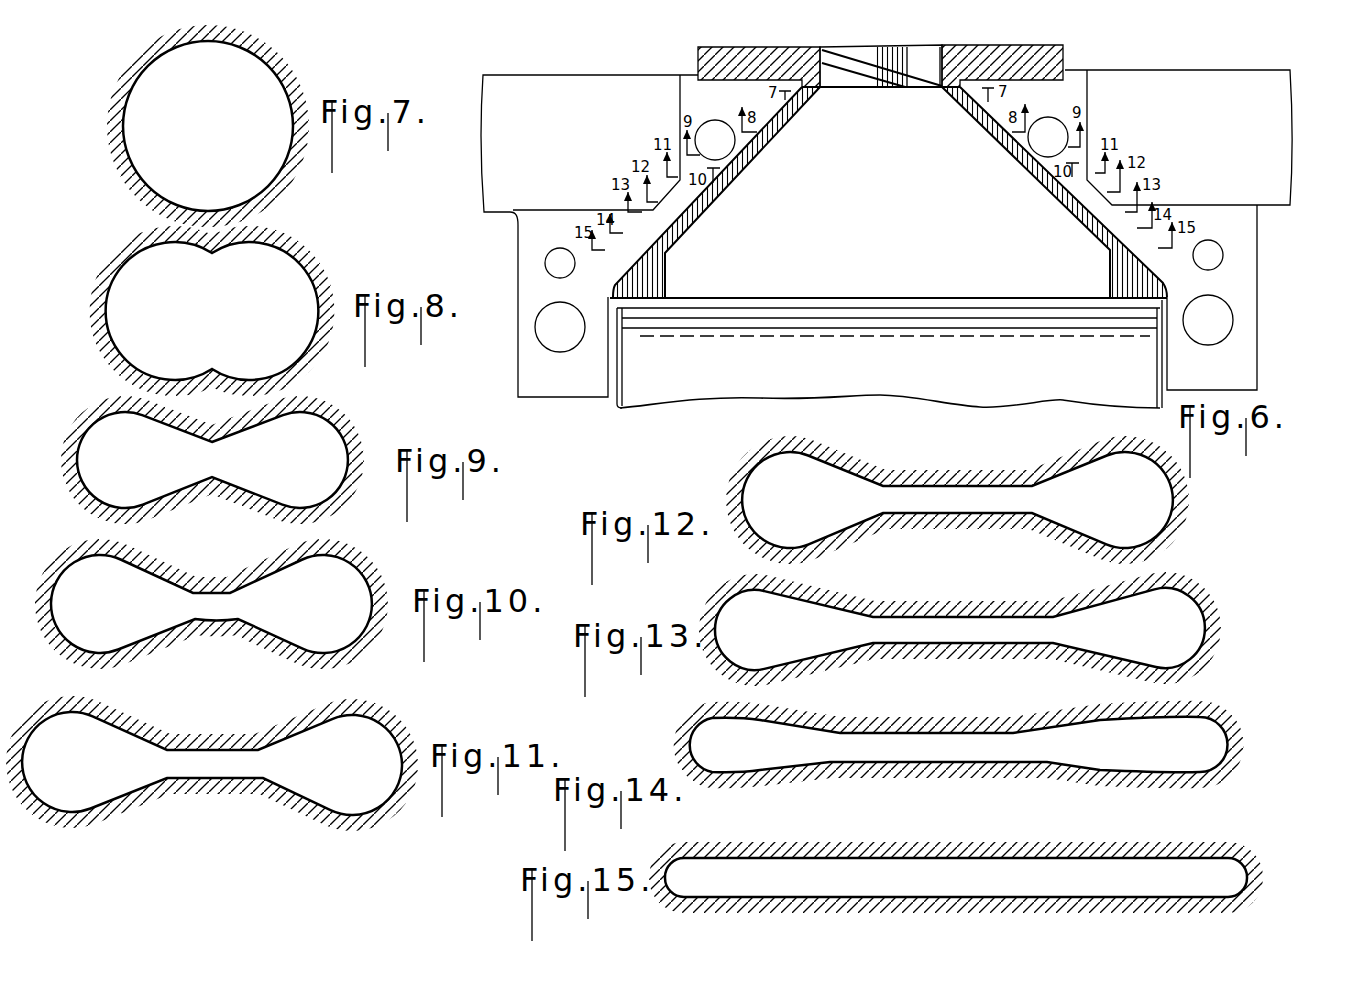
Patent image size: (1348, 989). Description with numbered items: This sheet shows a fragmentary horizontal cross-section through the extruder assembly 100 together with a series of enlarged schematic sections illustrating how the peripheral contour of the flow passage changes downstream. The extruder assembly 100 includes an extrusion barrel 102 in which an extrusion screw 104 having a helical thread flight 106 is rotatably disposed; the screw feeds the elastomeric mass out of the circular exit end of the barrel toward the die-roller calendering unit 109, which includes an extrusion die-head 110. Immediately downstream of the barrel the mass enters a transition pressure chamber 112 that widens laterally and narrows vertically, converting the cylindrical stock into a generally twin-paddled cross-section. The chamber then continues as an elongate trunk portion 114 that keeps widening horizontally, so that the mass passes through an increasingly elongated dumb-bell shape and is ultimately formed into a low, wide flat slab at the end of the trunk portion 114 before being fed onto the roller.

In FIG. 6, the extruder assembly 100 is at (1078, 53).
In FIG. 6, the extrusion barrel 102 is at (822, 50).
In FIG. 6, the extrusion screw 104 is at (877, 82).
In FIG. 6, the helical thread flight 106 is at (913, 88).
In FIG. 6, the die-roller calendering unit 109 is at (1258, 282).
In FIG. 6, the extrusion die-head 110 is at (1143, 279).
In FIG. 6, the transition pressure chamber 112 is at (785, 134).
In FIG. 7, the transition pressure chamber 112 is at (293, 80).
In FIG. 8, the transition pressure chamber 112 is at (318, 277).
In FIG. 9, the transition pressure chamber 112 is at (345, 438).
In FIG. 10, the transition pressure chamber 112 is at (371, 579).
In FIG. 11, the transition pressure chamber 112 is at (390, 727).
In FIG. 12, the transition pressure chamber 112 is at (1175, 497).
In FIG. 13, the transition pressure chamber 112 is at (1207, 632).
In FIG. 14, the transition pressure chamber 112 is at (1232, 742).
In FIG. 15, the transition pressure chamber 112 is at (1252, 877).
In FIG. 6, the elongate trunk portion 114 is at (707, 207).
In FIG. 10, the elongate trunk portion 114 is at (217, 622).
In FIG. 11, the elongate trunk portion 114 is at (218, 780).
In FIG. 12, the elongate trunk portion 114 is at (975, 514).
In FIG. 13, the elongate trunk portion 114 is at (968, 616).
In FIG. 14, the elongate trunk portion 114 is at (965, 733).
In FIG. 15, the elongate trunk portion 114 is at (970, 858).